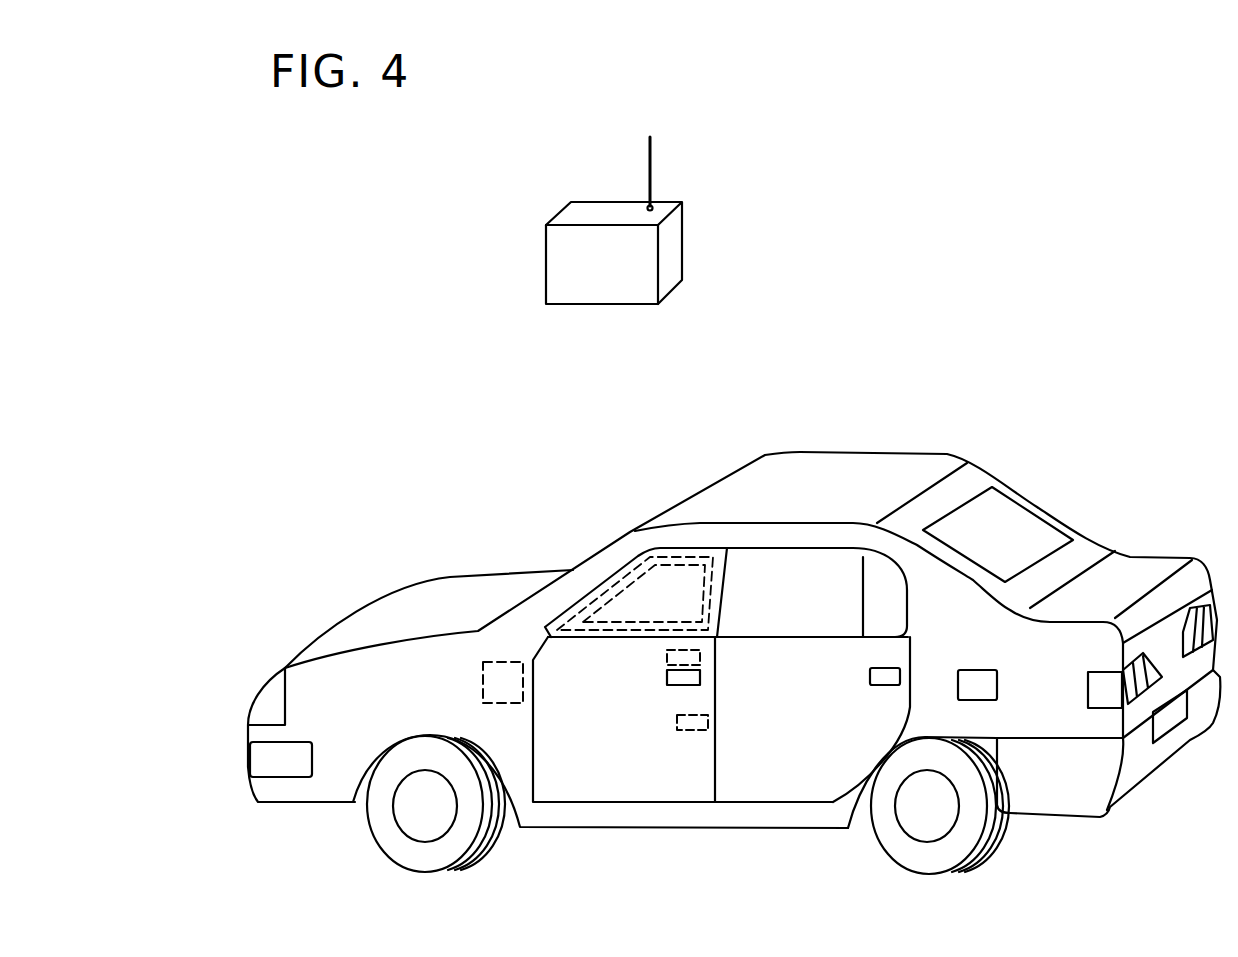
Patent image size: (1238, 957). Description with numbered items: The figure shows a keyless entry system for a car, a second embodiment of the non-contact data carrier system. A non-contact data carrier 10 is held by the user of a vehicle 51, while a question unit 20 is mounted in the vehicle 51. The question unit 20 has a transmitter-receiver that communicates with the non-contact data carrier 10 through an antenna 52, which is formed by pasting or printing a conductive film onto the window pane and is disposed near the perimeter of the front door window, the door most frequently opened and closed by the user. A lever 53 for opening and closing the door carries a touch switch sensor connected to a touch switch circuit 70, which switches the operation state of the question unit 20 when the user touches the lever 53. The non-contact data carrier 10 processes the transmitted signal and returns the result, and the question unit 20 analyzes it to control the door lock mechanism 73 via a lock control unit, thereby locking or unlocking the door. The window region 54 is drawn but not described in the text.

The non-contact data carrier 10 is at (683, 253).
The question unit 20 is at (500, 670).
The vehicle 51 is at (957, 605).
The antenna 52 is at (672, 557).
The lever 53 is at (683, 680).
The door window glass 54 is at (662, 592).
The touch switch circuit 70 is at (692, 658).
The door lock mechanism 73 is at (692, 730).